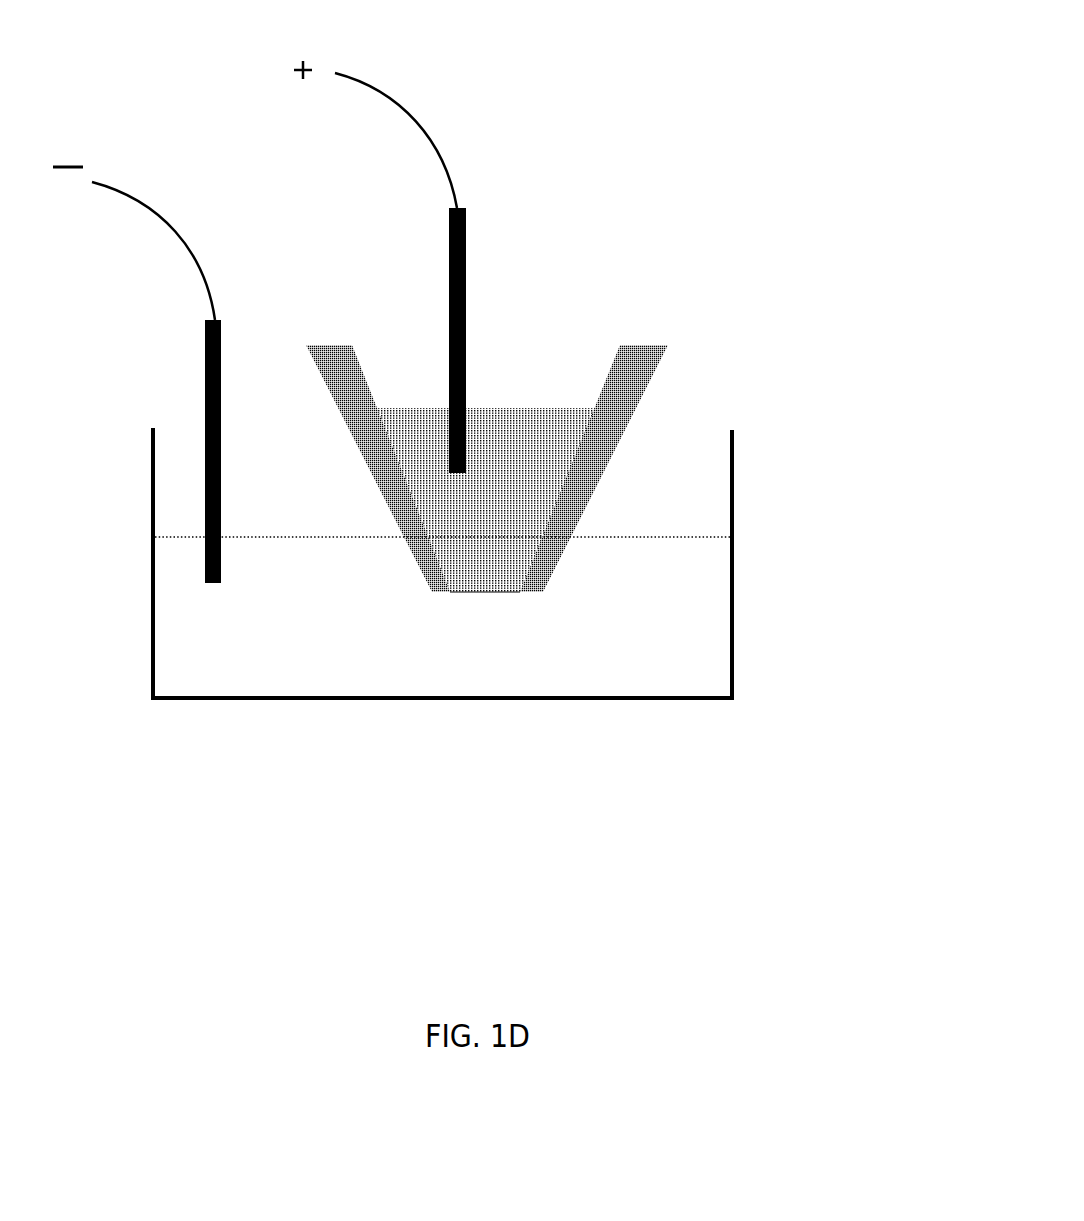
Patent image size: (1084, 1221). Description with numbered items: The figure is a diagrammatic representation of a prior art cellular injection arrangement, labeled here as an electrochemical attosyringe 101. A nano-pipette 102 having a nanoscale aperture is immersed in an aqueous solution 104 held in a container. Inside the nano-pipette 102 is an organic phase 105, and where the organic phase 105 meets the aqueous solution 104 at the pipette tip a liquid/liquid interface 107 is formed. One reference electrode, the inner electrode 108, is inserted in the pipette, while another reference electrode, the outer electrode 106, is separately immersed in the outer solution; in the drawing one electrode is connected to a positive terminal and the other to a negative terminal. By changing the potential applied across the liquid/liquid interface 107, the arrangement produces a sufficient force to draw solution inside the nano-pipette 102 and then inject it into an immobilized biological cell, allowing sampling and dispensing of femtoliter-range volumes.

The electrochemical attosyringe 101 is at (500, 389).
The nano-pipette 102 is at (695, 368).
The aqueous solution 104 is at (173, 583).
The organic phase 105 is at (517, 427).
The outer electrode 106 is at (448, 215).
The liquid/liquid interface 107 is at (483, 592).
The inner electrode 108 is at (203, 340).